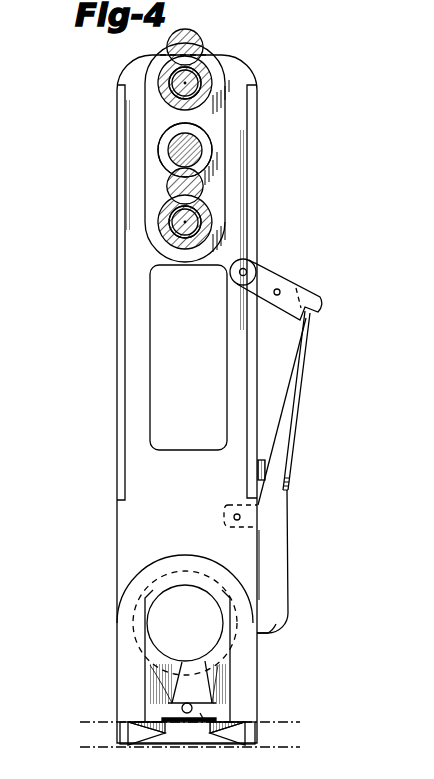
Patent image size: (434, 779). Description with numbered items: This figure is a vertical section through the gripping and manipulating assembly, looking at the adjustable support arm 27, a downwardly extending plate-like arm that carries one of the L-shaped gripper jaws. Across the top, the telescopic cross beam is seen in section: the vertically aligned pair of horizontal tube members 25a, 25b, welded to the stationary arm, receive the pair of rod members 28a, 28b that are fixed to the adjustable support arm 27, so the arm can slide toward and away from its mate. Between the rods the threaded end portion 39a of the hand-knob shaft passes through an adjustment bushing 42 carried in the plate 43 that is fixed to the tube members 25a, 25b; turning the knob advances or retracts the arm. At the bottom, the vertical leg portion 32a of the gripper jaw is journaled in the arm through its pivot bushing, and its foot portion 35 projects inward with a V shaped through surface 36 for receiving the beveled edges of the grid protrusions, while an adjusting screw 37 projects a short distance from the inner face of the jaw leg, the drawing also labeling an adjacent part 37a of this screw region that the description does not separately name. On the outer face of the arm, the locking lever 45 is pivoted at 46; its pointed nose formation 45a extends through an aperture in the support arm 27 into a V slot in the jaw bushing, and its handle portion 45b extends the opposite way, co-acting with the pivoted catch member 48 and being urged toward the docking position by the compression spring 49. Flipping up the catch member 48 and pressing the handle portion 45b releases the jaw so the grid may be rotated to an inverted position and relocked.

The horizontal tube member 25a is at (195, 70).
The horizontal tube member 25b is at (212, 222).
The adjustable support arm 27 is at (117, 532).
The rod member 28a is at (176, 83).
The rod member 28b is at (178, 222).
The vertical leg portion of gripper jaw 32a is at (147, 580).
The foot portion 35 is at (128, 722).
The V shaped through surface 36 is at (142, 744).
The adjusting screw 37 is at (187, 714).
The pin plate 37a is at (205, 713).
The threaded end portion of shaft 39a is at (168, 151).
The adjustment bushing 42 is at (203, 150).
The plate 43 is at (220, 95).
The locking lever 45 is at (290, 525).
The pointed nose formation 45a is at (272, 636).
The handle portion 45b is at (301, 375).
The pivot 46 is at (233, 516).
The pivoted catch member 48 is at (285, 289).
The compression spring 49 is at (258, 458).